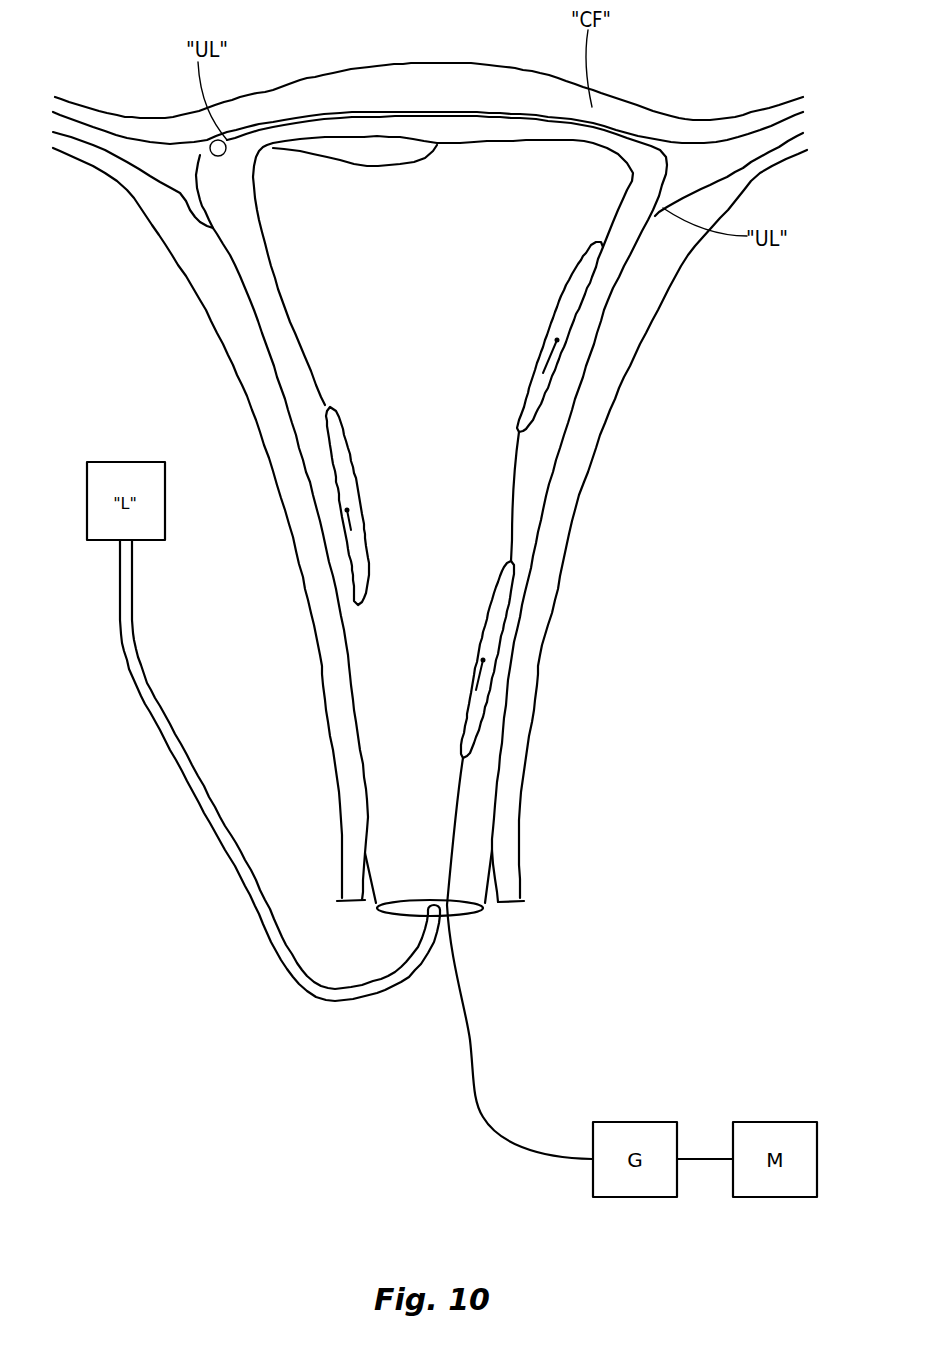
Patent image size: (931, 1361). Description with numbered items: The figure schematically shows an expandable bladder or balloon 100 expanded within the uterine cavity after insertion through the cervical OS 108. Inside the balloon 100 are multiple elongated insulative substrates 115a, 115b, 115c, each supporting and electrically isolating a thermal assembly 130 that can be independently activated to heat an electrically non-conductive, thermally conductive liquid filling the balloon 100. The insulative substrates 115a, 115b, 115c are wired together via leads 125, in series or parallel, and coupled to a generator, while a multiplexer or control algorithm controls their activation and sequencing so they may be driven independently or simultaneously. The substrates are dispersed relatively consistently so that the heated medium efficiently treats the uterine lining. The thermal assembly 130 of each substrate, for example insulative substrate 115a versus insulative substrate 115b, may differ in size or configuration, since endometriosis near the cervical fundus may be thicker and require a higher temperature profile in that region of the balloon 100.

The expandable balloon 100 is at (480, 588).
The cervical OS 108 is at (489, 907).
The insulative substrate 115a is at (493, 623).
The insulative substrate 115b is at (570, 312).
The insulative substrate 115c is at (388, 153).
The leads 125 is at (513, 492).
The thermal assembly 130 is at (352, 532).